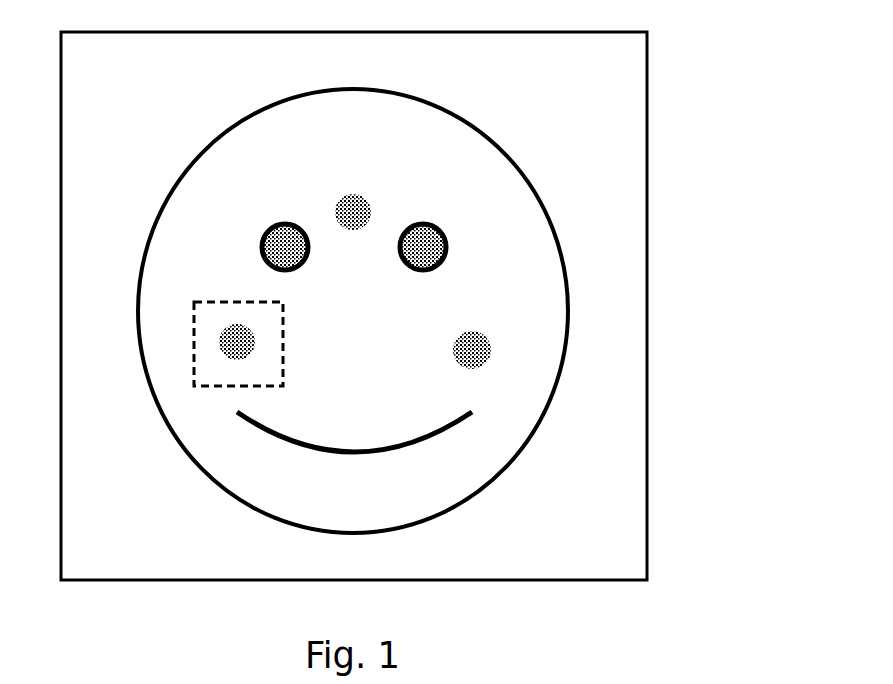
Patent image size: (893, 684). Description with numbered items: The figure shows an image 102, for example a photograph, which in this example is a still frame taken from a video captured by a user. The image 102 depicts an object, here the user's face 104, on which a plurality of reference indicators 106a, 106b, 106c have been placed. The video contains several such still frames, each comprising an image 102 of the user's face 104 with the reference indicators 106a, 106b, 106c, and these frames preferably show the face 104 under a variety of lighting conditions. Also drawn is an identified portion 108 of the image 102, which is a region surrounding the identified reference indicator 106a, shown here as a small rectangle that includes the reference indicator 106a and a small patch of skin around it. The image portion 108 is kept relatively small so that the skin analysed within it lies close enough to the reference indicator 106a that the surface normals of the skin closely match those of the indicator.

The image 102 is at (647, 100).
The user's face 104 is at (485, 132).
The reference indicator 106a is at (250, 348).
The reference indicator 106b is at (355, 212).
The reference indicator 106c is at (474, 346).
The identified portion of the image 108 is at (194, 321).